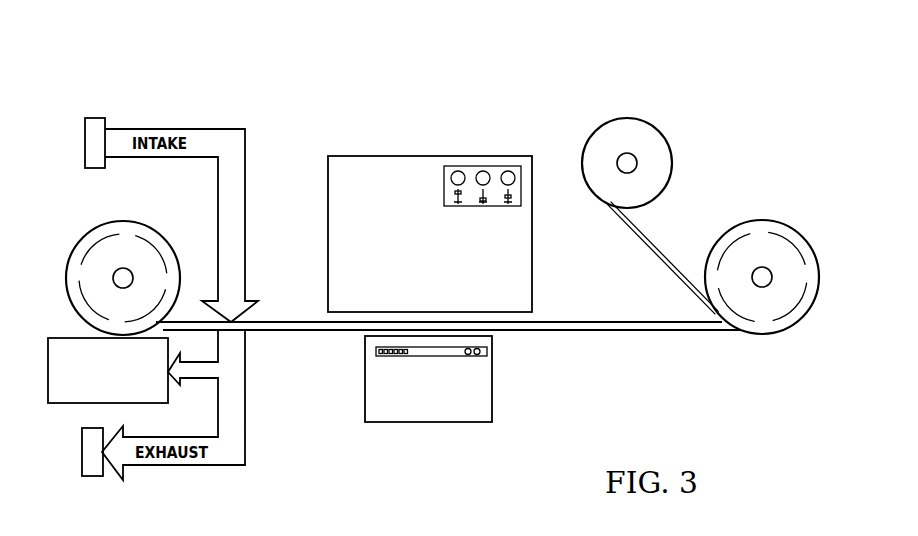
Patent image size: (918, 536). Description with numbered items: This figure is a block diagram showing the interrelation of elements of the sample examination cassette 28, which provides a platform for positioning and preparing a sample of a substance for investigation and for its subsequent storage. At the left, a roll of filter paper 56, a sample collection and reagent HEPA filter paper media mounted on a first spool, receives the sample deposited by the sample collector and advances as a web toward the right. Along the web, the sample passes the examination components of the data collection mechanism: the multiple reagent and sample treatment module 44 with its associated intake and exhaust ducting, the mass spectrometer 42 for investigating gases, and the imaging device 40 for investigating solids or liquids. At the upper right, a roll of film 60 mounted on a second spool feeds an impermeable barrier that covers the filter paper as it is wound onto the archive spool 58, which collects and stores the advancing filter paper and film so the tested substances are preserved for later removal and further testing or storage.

The sample examination cassette 28 is at (740, 64).
The imaging device 40 is at (468, 414).
The mass spectrometer 42 is at (63, 397).
The multiple reagent and sample treatment module 44 is at (396, 163).
The roll of filter paper 56 is at (73, 262).
The archive spool 58 is at (795, 237).
The roll of film 60 is at (622, 125).